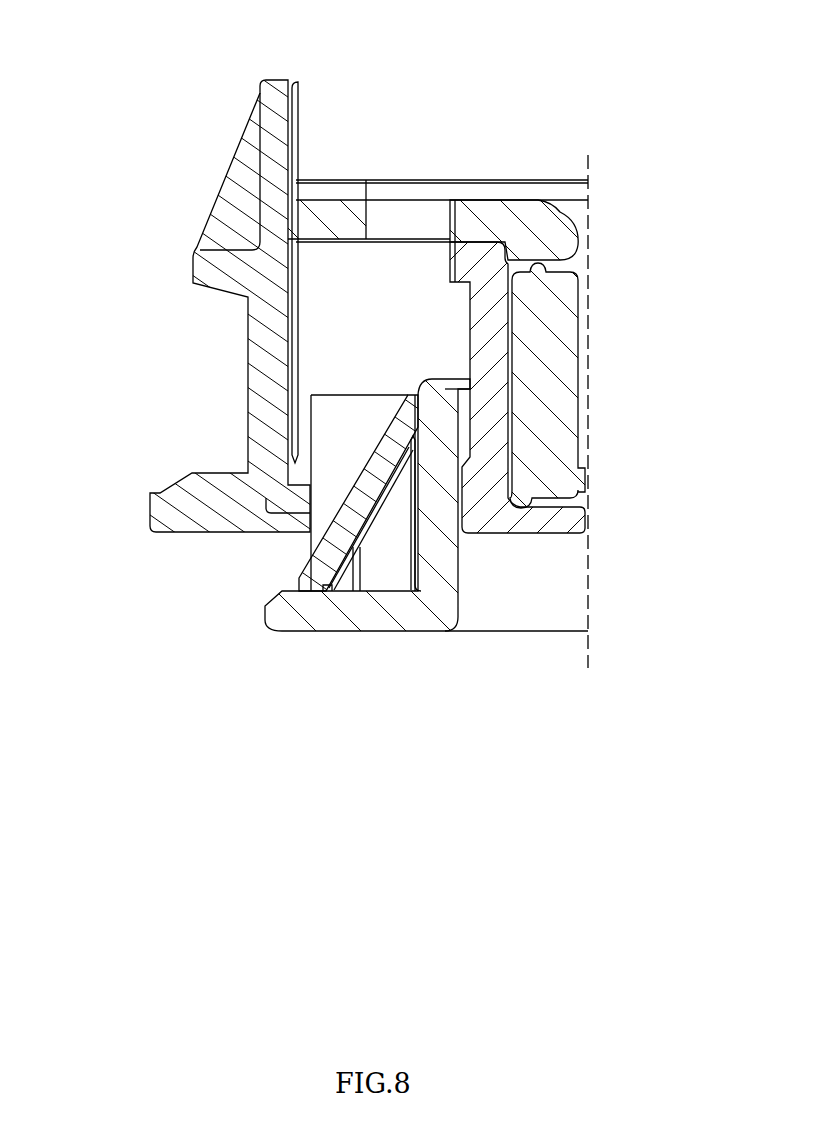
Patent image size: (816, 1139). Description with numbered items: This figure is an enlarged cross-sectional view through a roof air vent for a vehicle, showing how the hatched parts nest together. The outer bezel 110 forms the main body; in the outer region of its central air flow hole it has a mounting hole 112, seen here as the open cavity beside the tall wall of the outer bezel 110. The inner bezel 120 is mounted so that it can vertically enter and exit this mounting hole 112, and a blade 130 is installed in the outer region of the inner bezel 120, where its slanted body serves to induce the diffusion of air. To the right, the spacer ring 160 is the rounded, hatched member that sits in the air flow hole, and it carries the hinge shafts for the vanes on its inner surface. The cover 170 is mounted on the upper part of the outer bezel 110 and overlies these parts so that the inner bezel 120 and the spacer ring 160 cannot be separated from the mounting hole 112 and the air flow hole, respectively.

The outer bezel 110 is at (267, 196).
The mounting hole 112 is at (368, 323).
The cover 170 is at (515, 217).
The spacer ring 160 is at (552, 353).
The blade 130 is at (332, 545).
The inner bezel 120 is at (325, 615).